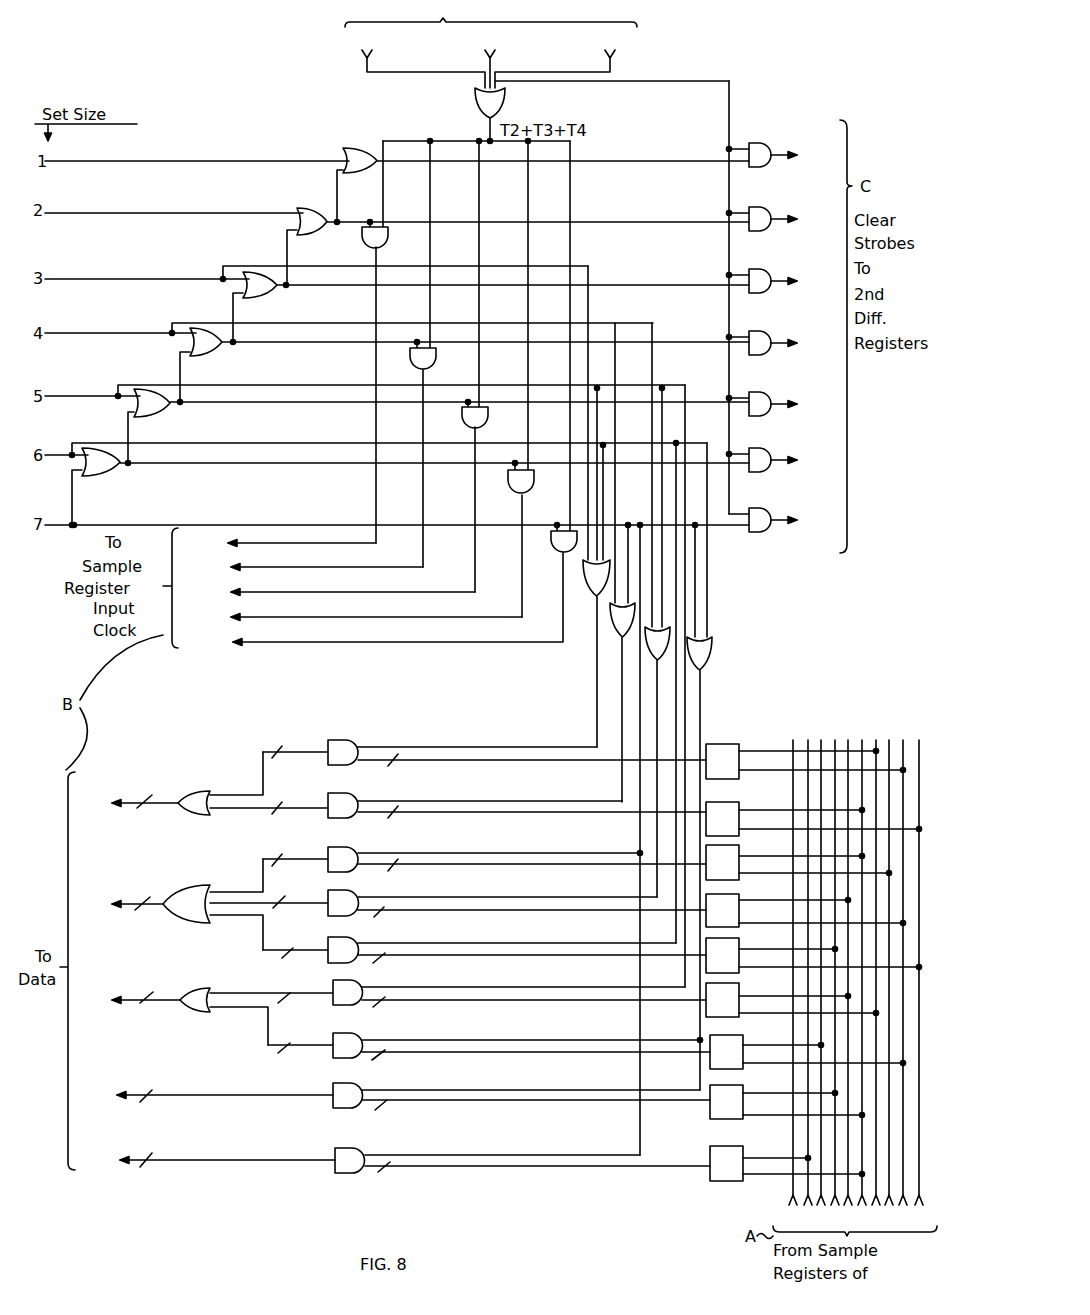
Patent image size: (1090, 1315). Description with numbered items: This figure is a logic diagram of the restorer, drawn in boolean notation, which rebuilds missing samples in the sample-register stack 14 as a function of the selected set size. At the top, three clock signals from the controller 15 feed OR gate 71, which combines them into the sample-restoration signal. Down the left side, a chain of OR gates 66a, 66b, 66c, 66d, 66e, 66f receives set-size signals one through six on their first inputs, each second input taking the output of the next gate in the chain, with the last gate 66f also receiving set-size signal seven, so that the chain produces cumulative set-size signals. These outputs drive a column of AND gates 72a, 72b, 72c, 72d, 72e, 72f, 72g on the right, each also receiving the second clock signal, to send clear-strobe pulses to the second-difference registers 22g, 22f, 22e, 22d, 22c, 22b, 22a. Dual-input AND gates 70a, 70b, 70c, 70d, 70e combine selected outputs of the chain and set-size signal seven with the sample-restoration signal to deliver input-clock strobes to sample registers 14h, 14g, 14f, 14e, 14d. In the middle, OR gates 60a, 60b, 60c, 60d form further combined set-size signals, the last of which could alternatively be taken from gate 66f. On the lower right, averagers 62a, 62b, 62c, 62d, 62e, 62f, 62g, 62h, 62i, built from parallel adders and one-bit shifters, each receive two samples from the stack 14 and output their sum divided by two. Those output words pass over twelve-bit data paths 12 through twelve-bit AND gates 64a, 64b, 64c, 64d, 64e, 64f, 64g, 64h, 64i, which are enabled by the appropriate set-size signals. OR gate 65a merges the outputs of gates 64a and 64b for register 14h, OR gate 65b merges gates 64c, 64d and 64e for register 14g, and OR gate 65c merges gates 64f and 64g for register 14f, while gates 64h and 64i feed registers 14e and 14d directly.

The data bus lines 12 is at (281, 961).
The stack 14 is at (848, 1022).
The register 14d is at (207, 901).
The register 14e is at (299, 856).
The register 14f is at (276, 796).
The register 14g is at (249, 735).
The register 14h is at (225, 673).
The controller 15 is at (537, 44).
The register 22a is at (801, 520).
The register 22b is at (801, 460).
The register 22c is at (800, 404).
The register 22d is at (801, 343).
The register 22e is at (801, 281).
The register 22f is at (799, 219).
The register 22g is at (801, 155).
The OR gate 60a is at (599, 584).
The OR gate 60b is at (620, 632).
The OR gate 60c is at (666, 637).
The OR gate 60d is at (702, 658).
The averager 62a is at (740, 750).
The averager 62b is at (740, 813).
The averager 62c is at (741, 859).
The averager 62d is at (741, 903).
The averager 62e is at (741, 954).
The averager 62f is at (740, 998).
The averager 62g is at (744, 1045).
The averager 62h is at (744, 1097).
The averager 62i is at (744, 1161).
The AND gate 64a is at (348, 741).
The AND gate 64b is at (349, 797).
The AND gate 64c is at (349, 852).
The AND gate 64d is at (349, 896).
The AND gate 64e is at (349, 944).
The AND gate 64f is at (354, 988).
The AND gate 64g is at (354, 1040).
The AND gate 64h is at (354, 1090).
The AND gate 64i is at (356, 1155).
The OR gate 65a is at (200, 797).
The OR gate 65b is at (203, 897).
The OR gate 65c is at (205, 997).
The OR gate 66a is at (352, 147).
The OR gate 66b is at (294, 212).
The OR gate 66c is at (249, 274).
The OR gate 66d is at (196, 335).
The OR gate 66e is at (138, 396).
The OR gate 66f is at (82, 454).
The AND gate 70a is at (386, 241).
The AND gate 70b is at (433, 360).
The AND gate 70c is at (484, 417).
The AND gate 70d is at (527, 478).
The AND gate 70e is at (558, 560).
The OR gate 71 is at (496, 99).
The AND gate 72a is at (743, 146).
The AND gate 72b is at (743, 212).
The AND gate 72c is at (743, 274).
The AND gate 72d is at (743, 335).
The AND gate 72e is at (743, 395).
The AND gate 72f is at (743, 453).
The AND gate 72g is at (743, 513).